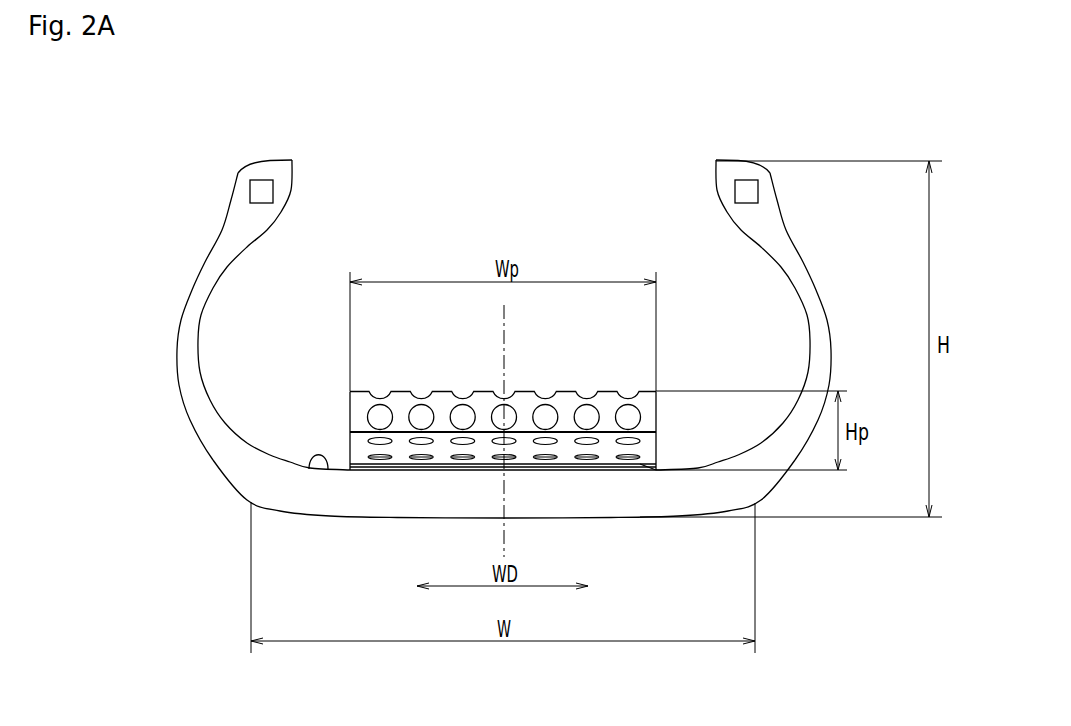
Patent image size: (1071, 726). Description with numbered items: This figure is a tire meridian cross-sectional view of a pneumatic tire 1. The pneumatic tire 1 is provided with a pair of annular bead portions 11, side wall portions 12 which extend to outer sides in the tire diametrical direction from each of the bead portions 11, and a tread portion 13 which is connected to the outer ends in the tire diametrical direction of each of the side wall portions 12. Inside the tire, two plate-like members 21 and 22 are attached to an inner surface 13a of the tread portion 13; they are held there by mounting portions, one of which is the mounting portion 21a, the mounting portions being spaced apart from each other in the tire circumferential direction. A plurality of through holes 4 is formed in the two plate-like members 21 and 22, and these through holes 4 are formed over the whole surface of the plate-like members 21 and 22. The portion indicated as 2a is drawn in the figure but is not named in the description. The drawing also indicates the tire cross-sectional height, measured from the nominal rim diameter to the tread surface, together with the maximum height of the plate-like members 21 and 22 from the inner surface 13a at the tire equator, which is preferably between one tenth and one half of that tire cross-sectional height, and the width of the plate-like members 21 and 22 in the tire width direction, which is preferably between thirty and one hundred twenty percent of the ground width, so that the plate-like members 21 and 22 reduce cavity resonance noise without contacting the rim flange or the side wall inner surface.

The pneumatic tire 1 is at (160, 231).
The bead portion 11 is at (228, 188).
The side wall portion 12 is at (168, 333).
The tread portion 13 is at (580, 527).
The inner surface of the tread portion 13a is at (309, 469).
The porous member 2a is at (503, 446).
The plate-like member 21 is at (350, 468).
The mounting portion 21a is at (638, 472).
The plate-like member 22 is at (398, 391).
The through hole 4 is at (545, 412).